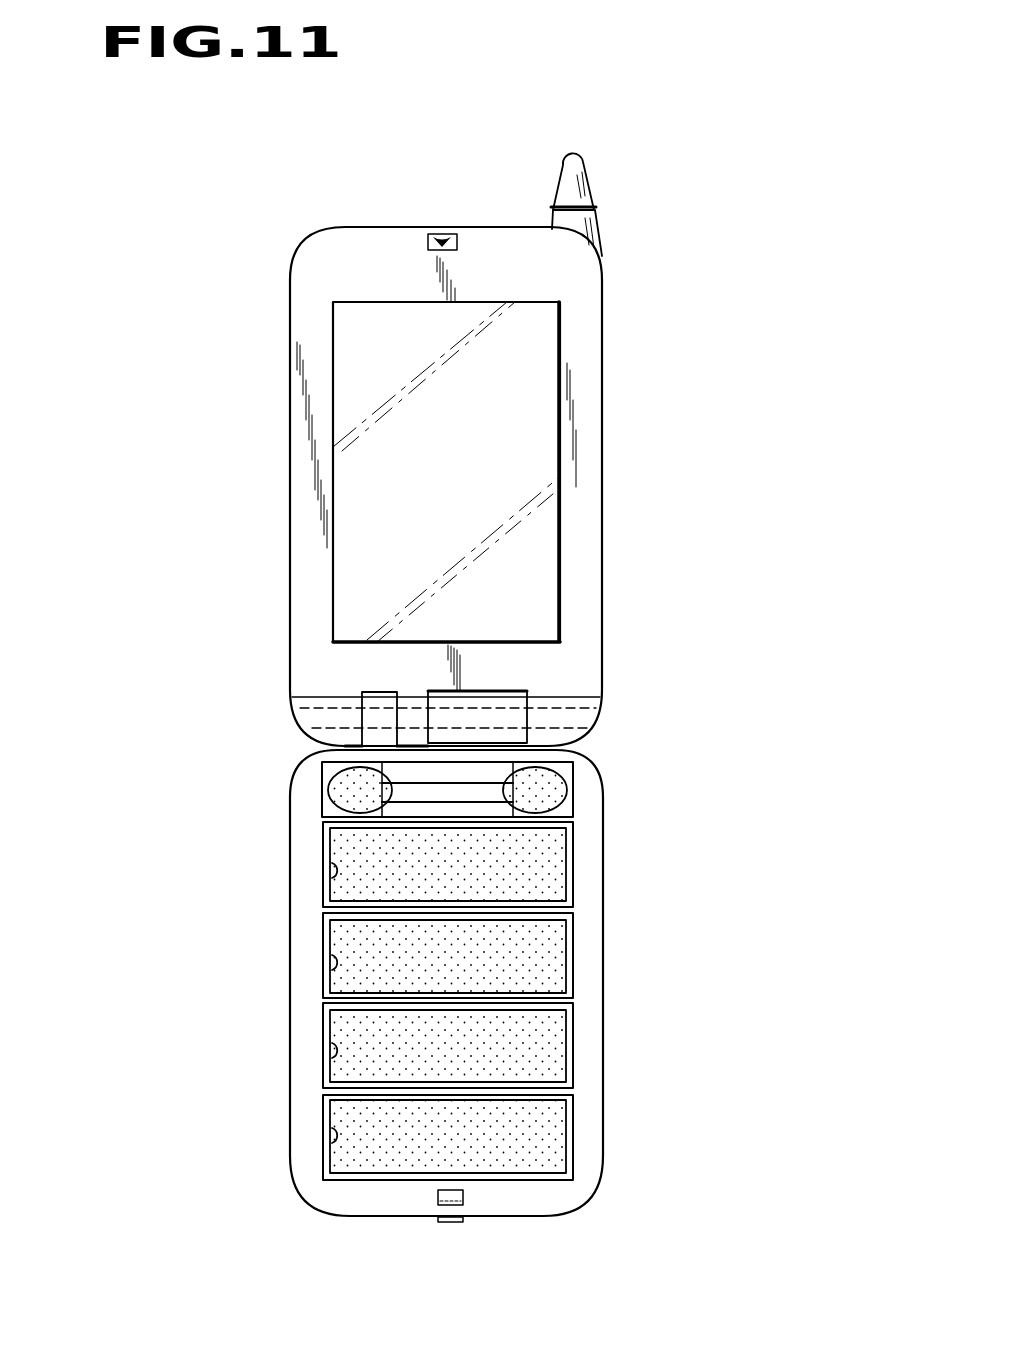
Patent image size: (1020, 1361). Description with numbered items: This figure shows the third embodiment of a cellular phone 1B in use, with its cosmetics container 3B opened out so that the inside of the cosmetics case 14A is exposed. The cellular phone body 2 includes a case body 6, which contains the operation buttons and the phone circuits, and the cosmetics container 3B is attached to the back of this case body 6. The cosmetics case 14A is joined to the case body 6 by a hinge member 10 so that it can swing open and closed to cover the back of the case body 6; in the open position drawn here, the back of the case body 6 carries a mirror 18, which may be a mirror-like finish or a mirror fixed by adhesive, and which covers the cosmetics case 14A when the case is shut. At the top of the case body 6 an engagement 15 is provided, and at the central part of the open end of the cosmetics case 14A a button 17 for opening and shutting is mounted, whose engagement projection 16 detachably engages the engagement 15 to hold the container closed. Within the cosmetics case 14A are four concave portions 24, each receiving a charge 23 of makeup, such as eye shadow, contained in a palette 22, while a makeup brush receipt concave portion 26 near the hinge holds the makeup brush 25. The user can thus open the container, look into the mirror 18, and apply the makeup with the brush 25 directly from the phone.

The cellular phone 1B is at (728, 260).
The cellular phone body 2 is at (622, 445).
The case body 6 is at (302, 445).
The mirror 18 is at (547, 537).
The engagement 15 is at (434, 232).
The hinge member 10 is at (538, 716).
The cosmetics container 3B is at (327, 1214).
The cosmetics case 14A is at (303, 1152).
The makeup brush 25 is at (555, 787).
The makeup brush receipt concave portion 26 is at (570, 802).
The palette 22 is at (572, 890).
The charge of makeup 23 is at (547, 868).
The concave portion 24 is at (333, 866).
The engagement projection 16 is at (463, 1199).
The button 17 is at (448, 1223).